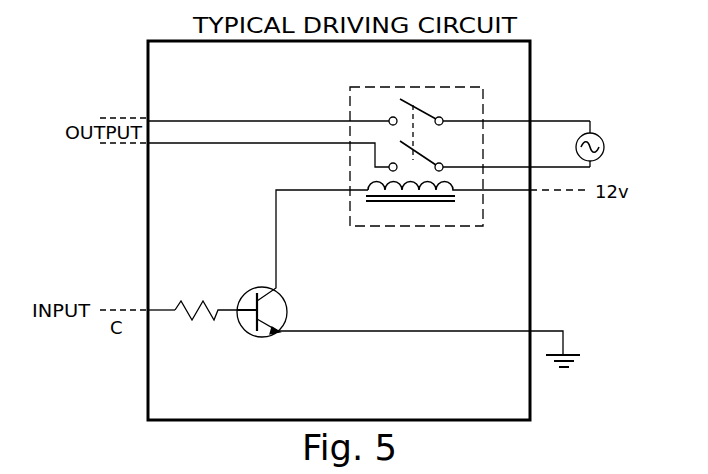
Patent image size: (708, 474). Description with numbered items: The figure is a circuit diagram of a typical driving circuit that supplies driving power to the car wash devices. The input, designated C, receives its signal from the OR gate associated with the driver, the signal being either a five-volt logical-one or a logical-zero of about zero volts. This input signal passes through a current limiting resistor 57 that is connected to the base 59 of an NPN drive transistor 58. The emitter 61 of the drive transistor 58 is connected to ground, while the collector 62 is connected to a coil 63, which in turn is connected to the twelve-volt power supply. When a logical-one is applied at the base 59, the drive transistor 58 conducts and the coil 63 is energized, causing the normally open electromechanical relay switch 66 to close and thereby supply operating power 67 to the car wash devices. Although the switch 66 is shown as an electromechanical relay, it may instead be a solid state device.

The current limiting resistor 57 is at (178, 300).
The NPN drive transistor 58 is at (252, 335).
The base 59 is at (238, 308).
The emitter 61 is at (278, 335).
The collector 62 is at (280, 289).
The coil 63 is at (435, 202).
The normally open electromechanical relay switch 66 is at (350, 107).
The operating power 67 is at (598, 136).